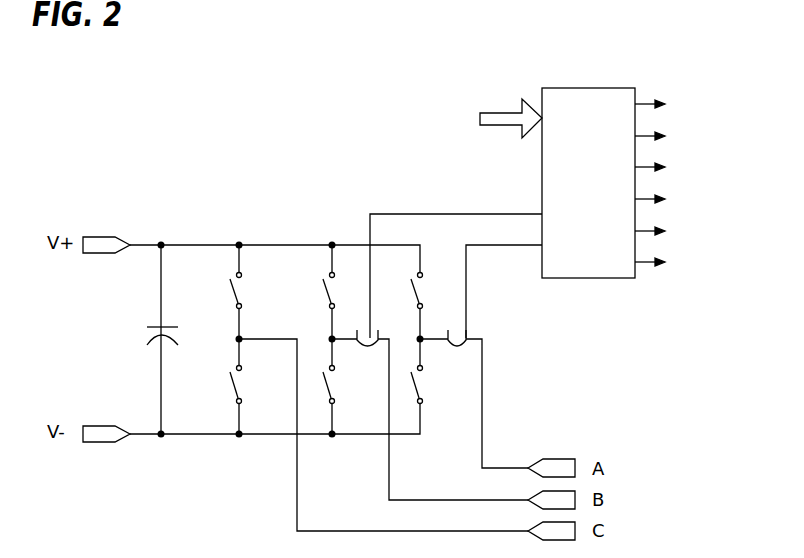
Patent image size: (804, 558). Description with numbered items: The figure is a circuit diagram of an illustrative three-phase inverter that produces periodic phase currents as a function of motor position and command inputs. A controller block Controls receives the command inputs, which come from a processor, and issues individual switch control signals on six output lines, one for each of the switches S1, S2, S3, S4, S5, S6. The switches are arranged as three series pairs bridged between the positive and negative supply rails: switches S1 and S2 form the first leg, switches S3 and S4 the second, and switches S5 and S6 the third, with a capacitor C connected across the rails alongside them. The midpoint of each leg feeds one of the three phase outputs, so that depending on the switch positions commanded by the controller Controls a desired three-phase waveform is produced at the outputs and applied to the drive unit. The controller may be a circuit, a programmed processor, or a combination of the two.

The inverter controller Controls is at (530, 202).
The capacitor C is at (172, 339).
The switch S1 is at (251, 291).
The switch S2 is at (251, 385).
The switch S3 is at (344, 291).
The switch S4 is at (344, 385).
The switch S5 is at (433, 291).
The switch S6 is at (433, 385).